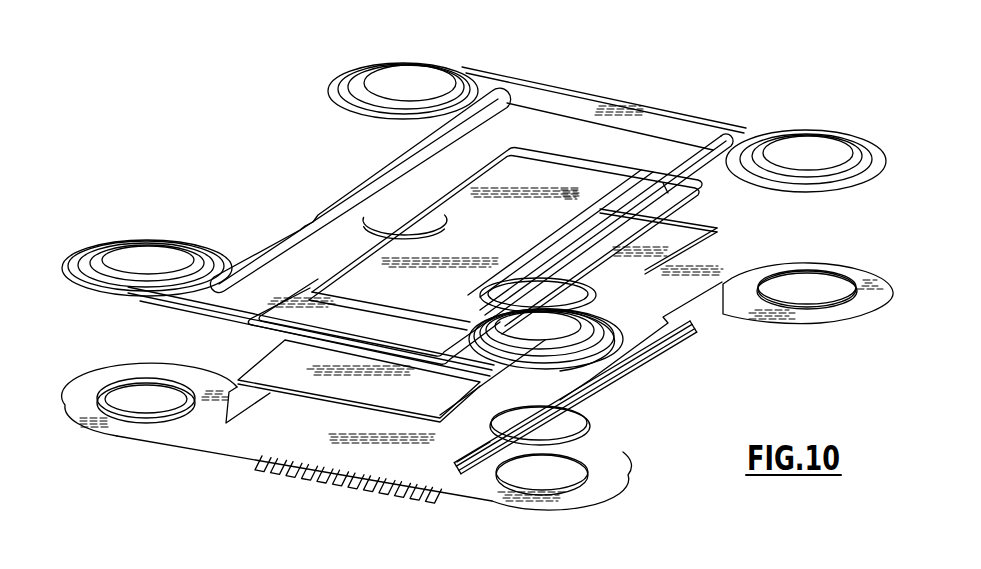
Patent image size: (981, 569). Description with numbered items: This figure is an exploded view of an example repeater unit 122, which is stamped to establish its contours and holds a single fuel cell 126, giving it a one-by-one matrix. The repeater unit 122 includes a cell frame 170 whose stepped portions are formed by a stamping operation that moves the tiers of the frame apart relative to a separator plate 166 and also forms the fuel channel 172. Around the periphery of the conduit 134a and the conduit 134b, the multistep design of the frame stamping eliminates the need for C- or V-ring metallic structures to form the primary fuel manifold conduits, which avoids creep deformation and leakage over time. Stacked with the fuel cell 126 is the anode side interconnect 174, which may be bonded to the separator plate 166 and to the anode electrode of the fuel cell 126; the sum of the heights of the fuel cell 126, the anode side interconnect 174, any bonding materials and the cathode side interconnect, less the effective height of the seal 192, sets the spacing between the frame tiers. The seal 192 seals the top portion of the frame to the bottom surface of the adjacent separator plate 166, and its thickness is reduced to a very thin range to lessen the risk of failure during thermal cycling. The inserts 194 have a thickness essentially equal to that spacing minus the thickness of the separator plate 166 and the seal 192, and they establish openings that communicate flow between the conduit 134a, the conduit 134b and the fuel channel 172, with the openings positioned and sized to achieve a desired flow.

The repeater unit 122 is at (802, 75).
The fuel cell 126 is at (557, 187).
The conduit 134a is at (572, 334).
The conduit 134b is at (125, 253).
The separator plate 166 is at (625, 476).
The cell frame 170 is at (600, 288).
The fuel channel 172 is at (266, 268).
The anode side interconnect 174 is at (708, 228).
The seal 192 is at (680, 338).
The inserts 194 is at (589, 428).